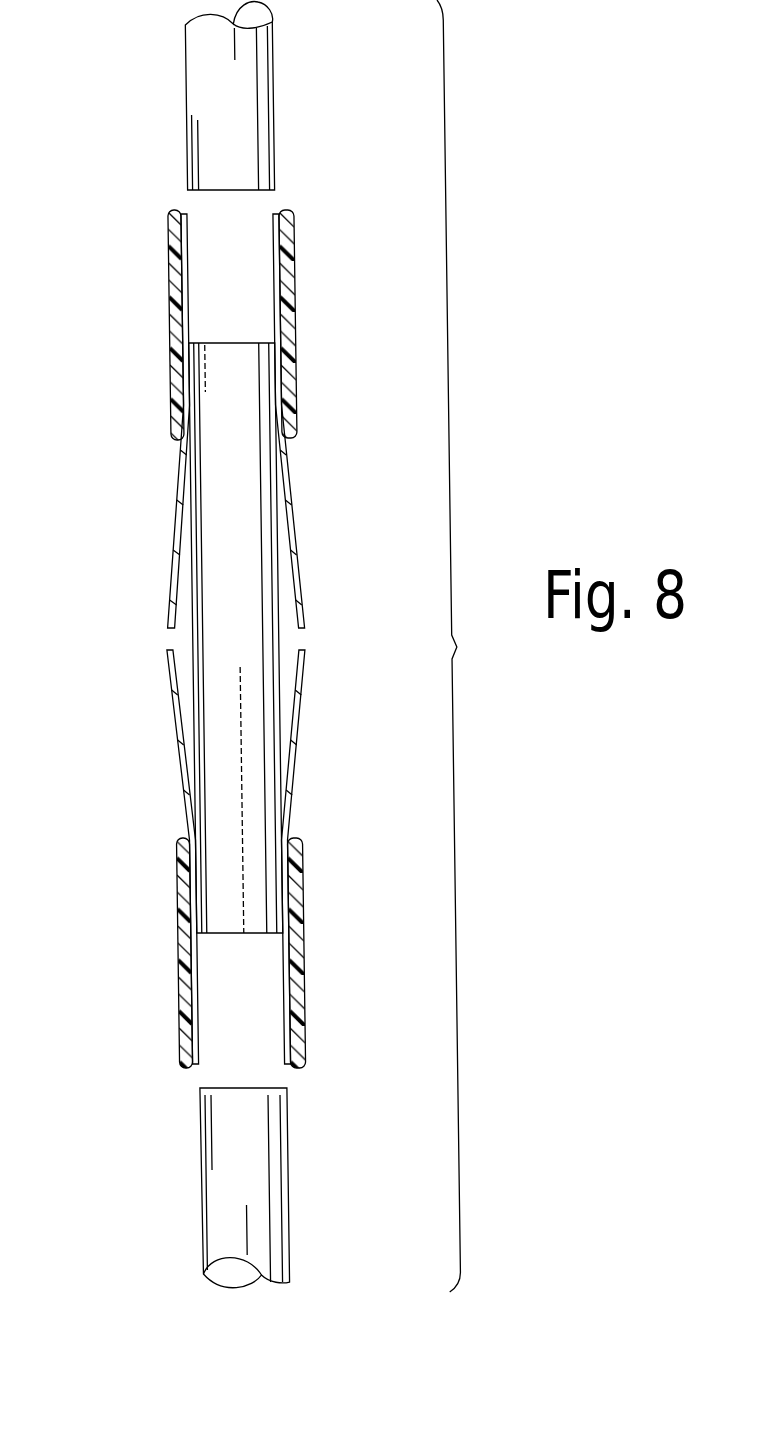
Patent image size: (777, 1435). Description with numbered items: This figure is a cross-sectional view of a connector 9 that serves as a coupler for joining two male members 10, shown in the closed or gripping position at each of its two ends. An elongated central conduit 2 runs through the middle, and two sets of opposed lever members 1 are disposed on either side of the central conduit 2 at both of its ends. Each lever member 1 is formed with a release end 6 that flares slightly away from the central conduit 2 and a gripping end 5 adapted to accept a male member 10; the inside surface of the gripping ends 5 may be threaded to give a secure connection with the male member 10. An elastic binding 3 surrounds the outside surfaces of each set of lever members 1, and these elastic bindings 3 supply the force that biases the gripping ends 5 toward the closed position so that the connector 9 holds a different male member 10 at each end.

The lever member 1 is at (160, 605).
The central conduit 2 is at (221, 493).
The elastic binding 3 is at (166, 357).
The gripping end 5 is at (166, 250).
The release end 6 is at (166, 638).
The connector 9 is at (299, 489).
The male member 10 is at (184, 100).